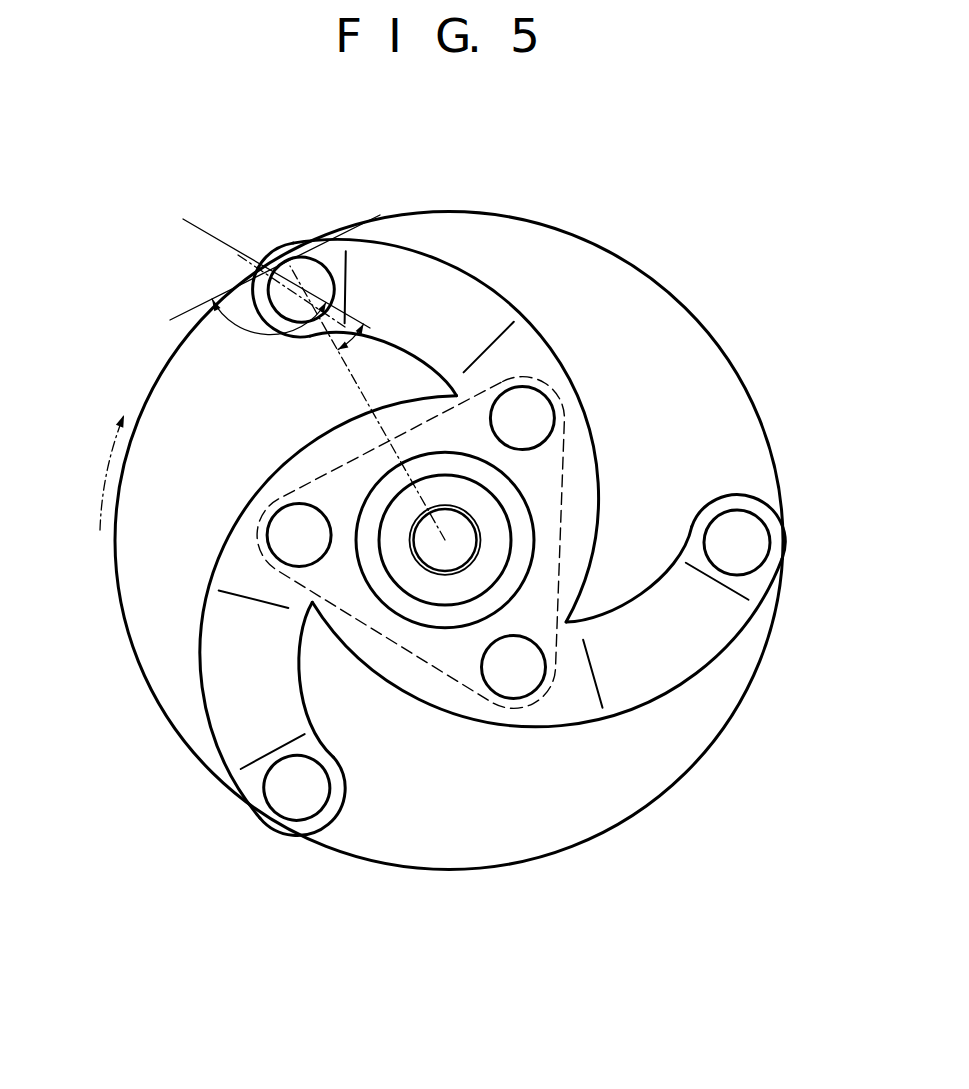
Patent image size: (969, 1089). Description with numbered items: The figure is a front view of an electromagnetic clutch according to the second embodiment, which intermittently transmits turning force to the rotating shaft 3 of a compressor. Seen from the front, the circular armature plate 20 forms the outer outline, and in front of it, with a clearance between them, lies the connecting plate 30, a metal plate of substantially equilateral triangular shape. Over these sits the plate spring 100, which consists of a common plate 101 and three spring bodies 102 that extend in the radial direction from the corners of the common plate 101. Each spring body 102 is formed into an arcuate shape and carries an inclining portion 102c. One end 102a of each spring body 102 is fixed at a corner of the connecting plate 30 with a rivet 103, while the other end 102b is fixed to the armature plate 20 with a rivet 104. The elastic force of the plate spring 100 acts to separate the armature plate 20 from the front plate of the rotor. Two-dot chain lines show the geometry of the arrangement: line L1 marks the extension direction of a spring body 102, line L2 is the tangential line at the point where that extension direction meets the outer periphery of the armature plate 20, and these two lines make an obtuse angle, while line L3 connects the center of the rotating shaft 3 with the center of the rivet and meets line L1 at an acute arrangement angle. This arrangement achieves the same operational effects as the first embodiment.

The rotating shaft 3 is at (465, 540).
The armature plate 20 is at (500, 871).
The connecting plate 30 is at (372, 666).
The plate spring 100 is at (502, 274).
The common plate 101 is at (433, 683).
The spring body 102 is at (461, 532).
The one end of spring body 102a is at (550, 357).
The other end of spring body 102b is at (312, 242).
The inclining portion 102c is at (447, 268).
The rivet 103 is at (518, 411).
The rivet 104 is at (293, 275).
The extension direction line L1 is at (212, 237).
The tangential line L2 is at (195, 328).
The connecting line direction L3 is at (352, 393).